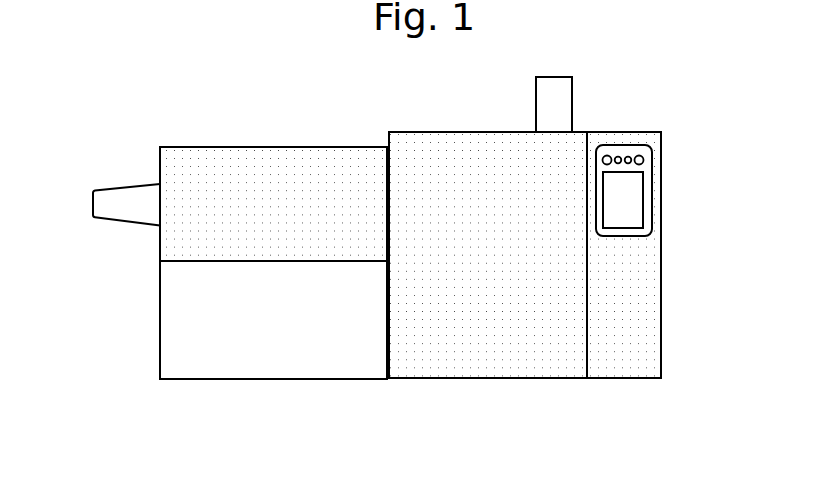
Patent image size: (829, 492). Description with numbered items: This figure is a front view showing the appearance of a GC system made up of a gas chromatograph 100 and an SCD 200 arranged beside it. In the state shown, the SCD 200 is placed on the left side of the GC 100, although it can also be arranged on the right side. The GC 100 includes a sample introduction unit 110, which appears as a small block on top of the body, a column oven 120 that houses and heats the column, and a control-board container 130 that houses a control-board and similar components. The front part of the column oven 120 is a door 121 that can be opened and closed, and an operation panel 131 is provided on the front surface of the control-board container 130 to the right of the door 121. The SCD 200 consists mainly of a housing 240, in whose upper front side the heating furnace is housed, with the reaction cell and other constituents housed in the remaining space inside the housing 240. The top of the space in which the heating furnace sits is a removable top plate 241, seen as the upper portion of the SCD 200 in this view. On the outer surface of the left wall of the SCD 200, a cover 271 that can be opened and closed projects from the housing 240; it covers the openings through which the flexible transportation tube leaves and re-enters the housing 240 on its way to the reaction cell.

The gas chromatograph 100 is at (553, 280).
The sample introduction unit 110 is at (573, 112).
The column oven 120 is at (587, 386).
The door 121 is at (443, 142).
The control-board container 130 is at (590, 386).
The operation panel 131 is at (652, 192).
The SCD 200 is at (239, 283).
The housing 240 is at (158, 294).
The top plate 241 is at (256, 146).
The cover 271 is at (120, 186).